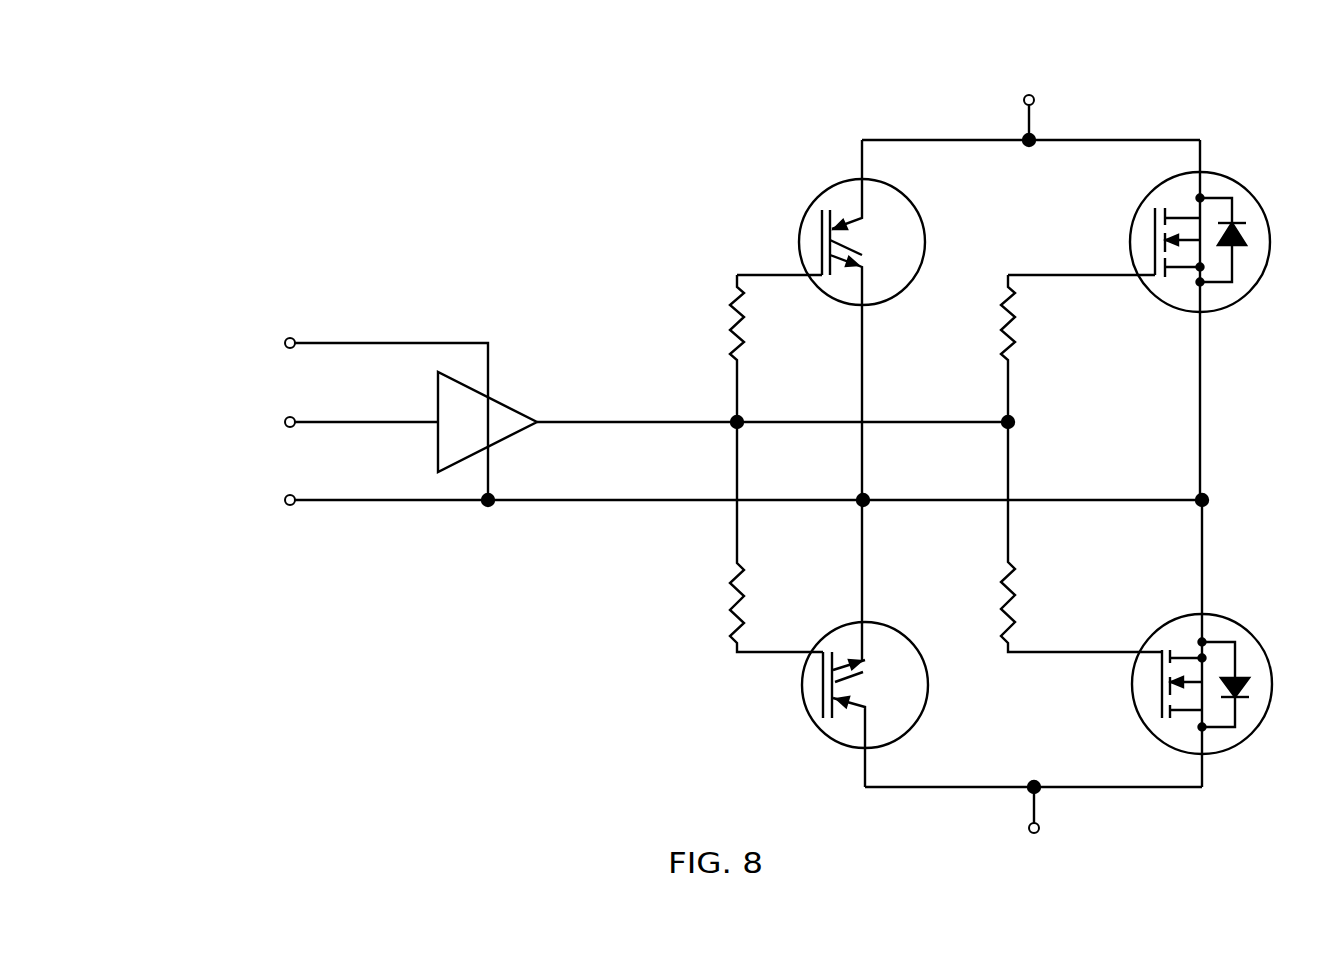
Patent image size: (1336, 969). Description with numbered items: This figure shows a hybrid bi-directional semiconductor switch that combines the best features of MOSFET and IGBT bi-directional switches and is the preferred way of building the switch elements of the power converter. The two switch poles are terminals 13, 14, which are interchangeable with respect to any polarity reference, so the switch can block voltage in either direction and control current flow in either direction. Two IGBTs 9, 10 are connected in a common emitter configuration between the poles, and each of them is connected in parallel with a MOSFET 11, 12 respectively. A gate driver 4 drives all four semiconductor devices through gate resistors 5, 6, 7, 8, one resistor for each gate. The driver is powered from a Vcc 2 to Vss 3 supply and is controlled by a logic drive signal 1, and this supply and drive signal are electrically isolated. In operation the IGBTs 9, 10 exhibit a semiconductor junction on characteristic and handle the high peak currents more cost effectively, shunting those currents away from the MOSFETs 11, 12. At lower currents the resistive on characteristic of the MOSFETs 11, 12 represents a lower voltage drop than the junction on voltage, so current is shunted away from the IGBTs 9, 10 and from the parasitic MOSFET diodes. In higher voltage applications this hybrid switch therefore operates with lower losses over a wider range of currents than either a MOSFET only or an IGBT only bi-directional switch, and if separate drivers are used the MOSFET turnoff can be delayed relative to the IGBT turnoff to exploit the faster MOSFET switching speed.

The logic drive signal 1 is at (270, 426).
The Vcc 2 is at (298, 415).
The Vss 3 is at (655, 506).
The gate driver 4 is at (726, 419).
The gate resistor 5 is at (776, 348).
The gate resistor 6 is at (776, 537).
The gate resistor 7 is at (1078, 348).
The gate resistor 8 is at (1081, 537).
The IGBT 9 is at (874, 400).
The IGBT 10 is at (888, 703).
The MOSFET 11 is at (1227, 320).
The MOSFET 12 is at (1229, 643).
The terminal 13 is at (1031, 98).
The terminal 14 is at (1033, 830).